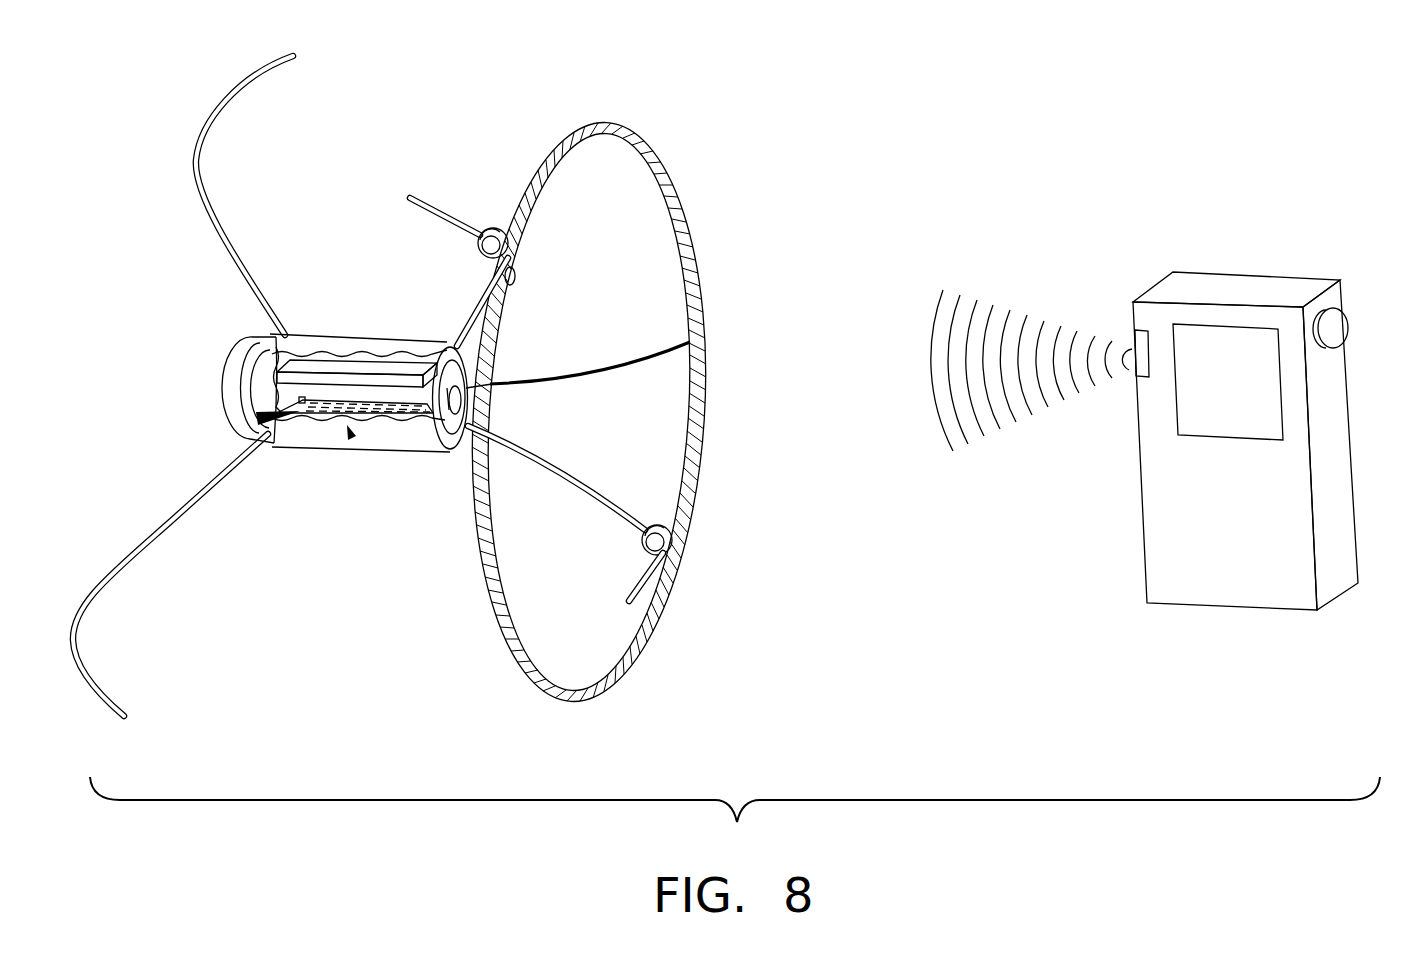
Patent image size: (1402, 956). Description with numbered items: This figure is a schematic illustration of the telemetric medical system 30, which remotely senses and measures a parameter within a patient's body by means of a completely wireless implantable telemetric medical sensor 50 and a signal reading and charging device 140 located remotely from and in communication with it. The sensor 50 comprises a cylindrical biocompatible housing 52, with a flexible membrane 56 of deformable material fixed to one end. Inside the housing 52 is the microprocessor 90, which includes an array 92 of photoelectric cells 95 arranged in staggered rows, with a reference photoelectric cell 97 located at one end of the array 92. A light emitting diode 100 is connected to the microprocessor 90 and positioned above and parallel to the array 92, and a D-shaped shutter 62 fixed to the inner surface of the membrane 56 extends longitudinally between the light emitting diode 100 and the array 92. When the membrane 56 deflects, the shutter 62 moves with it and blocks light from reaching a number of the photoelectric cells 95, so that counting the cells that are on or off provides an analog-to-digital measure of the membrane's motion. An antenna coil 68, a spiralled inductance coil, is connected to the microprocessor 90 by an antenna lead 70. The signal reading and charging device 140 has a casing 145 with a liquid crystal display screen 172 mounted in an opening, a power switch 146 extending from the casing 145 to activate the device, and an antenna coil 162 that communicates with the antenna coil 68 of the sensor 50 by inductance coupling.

The telemetric medical system 30 is at (893, 111).
The implantable telemetric medical sensor 50 is at (408, 152).
The housing 52 is at (292, 437).
The flexible membrane 56 is at (451, 397).
The shutter 62 is at (340, 390).
The antenna coil 68 is at (703, 435).
The antenna lead 70 is at (651, 348).
The microprocessor 90 is at (258, 418).
The array of photoelectric cells 92 is at (350, 433).
The photoelectric cell 95 is at (397, 416).
The reference photoelectric cell 97 is at (298, 398).
The light emitting diode 100 is at (317, 368).
The signal reading and charging device 140 is at (1273, 212).
The casing 145 is at (1250, 569).
The power switch 146 is at (1337, 330).
The antenna coil 162 is at (1137, 337).
The liquid crystal display screen 172 is at (1250, 394).